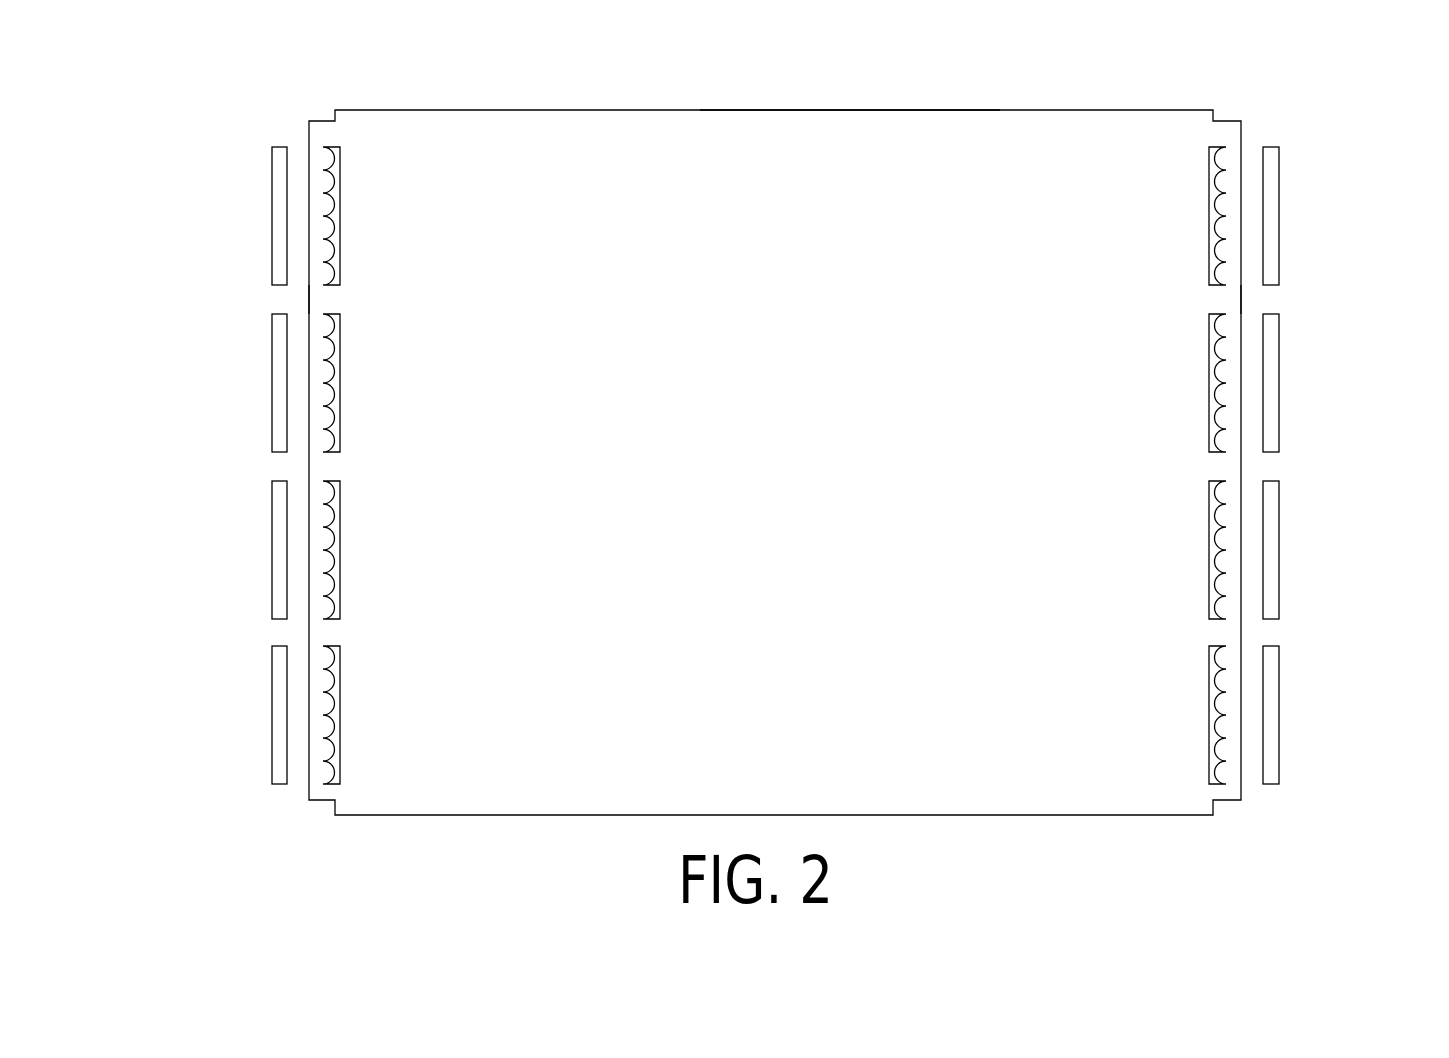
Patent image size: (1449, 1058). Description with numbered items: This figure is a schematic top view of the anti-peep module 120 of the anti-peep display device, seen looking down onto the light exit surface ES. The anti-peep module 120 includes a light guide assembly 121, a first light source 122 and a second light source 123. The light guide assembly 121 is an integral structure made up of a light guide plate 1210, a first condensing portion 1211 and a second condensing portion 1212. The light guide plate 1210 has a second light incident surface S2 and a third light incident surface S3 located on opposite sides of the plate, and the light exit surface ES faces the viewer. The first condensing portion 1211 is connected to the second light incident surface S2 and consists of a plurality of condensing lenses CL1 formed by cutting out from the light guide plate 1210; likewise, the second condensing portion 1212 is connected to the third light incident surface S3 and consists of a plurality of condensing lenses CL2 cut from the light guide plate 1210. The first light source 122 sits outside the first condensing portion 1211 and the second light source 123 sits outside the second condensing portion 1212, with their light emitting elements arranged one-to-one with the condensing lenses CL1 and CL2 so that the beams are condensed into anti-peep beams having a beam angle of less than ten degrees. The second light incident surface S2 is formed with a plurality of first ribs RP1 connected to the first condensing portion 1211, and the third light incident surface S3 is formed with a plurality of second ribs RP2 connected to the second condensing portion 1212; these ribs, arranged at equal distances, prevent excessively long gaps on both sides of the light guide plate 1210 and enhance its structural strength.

The anti-peep module 120 is at (195, 73).
The light guide assembly 121 is at (139, 688).
The light guide plate 1210 is at (763, 130).
The first condensing portion 1211 is at (218, 464).
The second condensing portion 1212 is at (794, 464).
The condensing lens CL1 is at (322, 152).
The condensing lens CL2 is at (1226, 152).
The first light source 122 is at (282, 212).
The second light source 123 is at (1270, 212).
The first rib RP1 is at (330, 300).
The second rib RP2 is at (1220, 302).
The second light incident surface S2 is at (333, 390).
The third light incident surface S3 is at (1215, 392).
The light exit surface ES is at (902, 168).